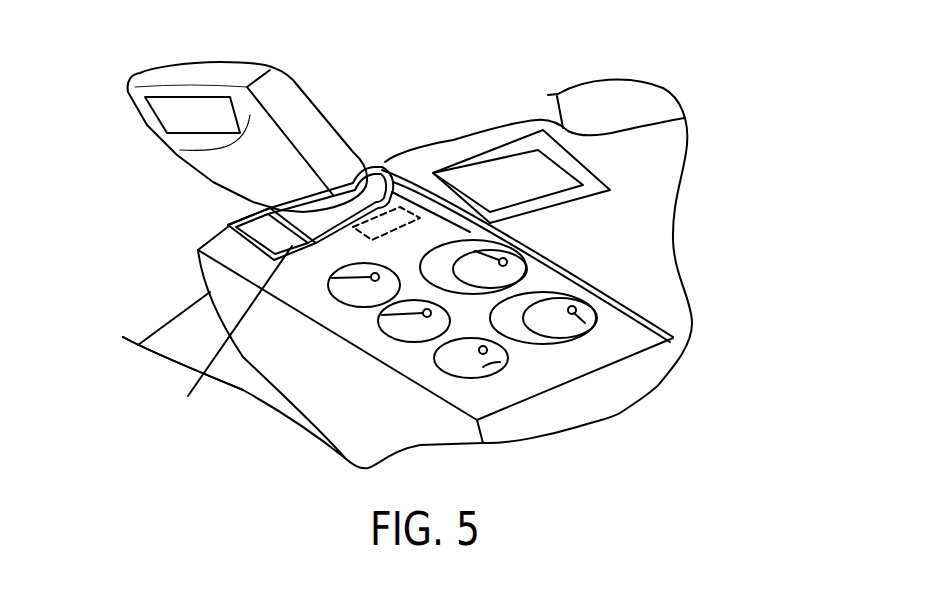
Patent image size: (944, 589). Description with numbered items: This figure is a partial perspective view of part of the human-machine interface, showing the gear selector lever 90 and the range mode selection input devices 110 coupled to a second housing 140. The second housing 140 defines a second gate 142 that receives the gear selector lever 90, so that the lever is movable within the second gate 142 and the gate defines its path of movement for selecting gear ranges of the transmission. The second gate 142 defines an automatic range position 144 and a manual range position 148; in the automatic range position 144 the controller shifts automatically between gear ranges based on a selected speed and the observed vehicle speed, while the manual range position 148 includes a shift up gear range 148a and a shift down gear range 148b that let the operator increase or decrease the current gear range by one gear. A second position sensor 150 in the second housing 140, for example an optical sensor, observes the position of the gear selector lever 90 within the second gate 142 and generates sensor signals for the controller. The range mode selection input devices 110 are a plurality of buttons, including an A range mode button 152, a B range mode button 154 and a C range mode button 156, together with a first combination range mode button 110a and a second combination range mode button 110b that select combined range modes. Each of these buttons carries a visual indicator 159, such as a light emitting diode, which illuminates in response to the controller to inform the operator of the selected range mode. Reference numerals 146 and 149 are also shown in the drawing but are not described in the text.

The gear selector lever 90 is at (190, 115).
The range mode selection input devices 110 is at (642, 375).
The first combination range mode button 110a is at (468, 250).
The second combination range mode button 110b is at (600, 303).
The second housing 140 is at (443, 227).
The second gate 142 is at (141, 172).
The automatic range position 144 is at (385, 183).
The connector socket 146 is at (348, 203).
The manual range position 148 is at (203, 246).
The shift up gear range 148a is at (228, 225).
The shift down gear range 148b is at (172, 362).
The latch edge 149 is at (225, 336).
The second position sensor 150 is at (400, 207).
The A range mode button 152 is at (352, 302).
The B range mode button 154 is at (408, 328).
The C range mode button 156 is at (508, 358).
The visual indicator 159 is at (299, 224).